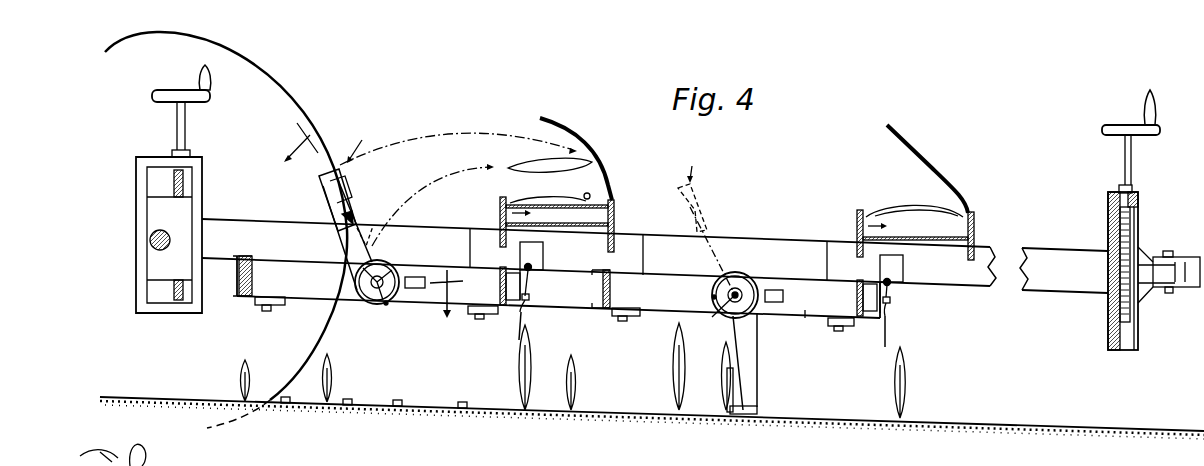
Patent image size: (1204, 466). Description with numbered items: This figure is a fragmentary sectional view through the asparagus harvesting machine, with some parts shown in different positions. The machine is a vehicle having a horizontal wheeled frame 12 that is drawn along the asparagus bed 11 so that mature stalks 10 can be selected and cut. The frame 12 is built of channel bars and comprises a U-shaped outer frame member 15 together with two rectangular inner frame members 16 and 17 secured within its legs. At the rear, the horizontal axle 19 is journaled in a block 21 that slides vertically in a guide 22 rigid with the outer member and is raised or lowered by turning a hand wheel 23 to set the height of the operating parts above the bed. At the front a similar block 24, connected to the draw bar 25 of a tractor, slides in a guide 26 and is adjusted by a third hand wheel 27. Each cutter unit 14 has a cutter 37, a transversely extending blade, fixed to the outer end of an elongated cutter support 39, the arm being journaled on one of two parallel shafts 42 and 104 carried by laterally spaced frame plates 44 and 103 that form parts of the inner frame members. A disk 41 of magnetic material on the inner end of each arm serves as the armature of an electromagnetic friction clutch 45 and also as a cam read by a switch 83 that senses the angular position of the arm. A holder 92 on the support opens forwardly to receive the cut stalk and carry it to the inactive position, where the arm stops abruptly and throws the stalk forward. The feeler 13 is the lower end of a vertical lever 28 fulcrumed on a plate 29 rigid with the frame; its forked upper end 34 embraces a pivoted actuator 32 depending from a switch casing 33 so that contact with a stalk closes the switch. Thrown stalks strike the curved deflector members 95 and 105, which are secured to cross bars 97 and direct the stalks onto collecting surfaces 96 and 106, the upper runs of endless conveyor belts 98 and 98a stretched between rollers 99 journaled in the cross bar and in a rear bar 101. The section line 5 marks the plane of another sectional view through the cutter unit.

The section line 5- 5 is at (368, 226).
The mature stalk 10 is at (512, 196).
The asparagus bed 11 is at (425, 404).
The frame 12 is at (1020, 258).
The feeler 13 is at (528, 318).
The cutter unit 14 is at (521, 183).
The outer frame member 15 is at (787, 256).
The inner frame member 16 is at (556, 281).
The inner frame member 17 is at (804, 273).
The axle 19 is at (150, 240).
The block 21 is at (183, 212).
The guide 22 is at (190, 190).
The hand wheel 23 is at (207, 96).
The block 24 is at (1118, 250).
The draw bar 25 is at (1185, 257).
The guide 26 is at (1140, 222).
The hand wheel 27 is at (1108, 125).
The lever 28 is at (530, 308).
The plate 29 is at (505, 290).
The actuator 32 is at (532, 268).
The casing 33 is at (543, 262).
The forked upper end 34 is at (530, 296).
The cutter 37 is at (340, 178).
The cutter support 39 is at (336, 245).
The disk 41 is at (386, 262).
The shaft 42 is at (367, 299).
The frame plate 44 is at (319, 301).
The electromagnetic friction clutch 45 is at (386, 306).
The switch 83 is at (416, 289).
The holder 92 is at (321, 200).
The deflector member 95 is at (566, 134).
The collecting surface 96 is at (578, 192).
The cross bar 97 is at (614, 226).
The endless conveyor belt 98 is at (500, 208).
The endless conveyor belt 98a is at (860, 222).
The roller 99 is at (612, 213).
The bar 101 is at (500, 216).
The frame plate 103 is at (806, 311).
The shaft 104 is at (698, 325).
The deflector member 105 is at (922, 152).
The collecting surface 106 is at (895, 215).